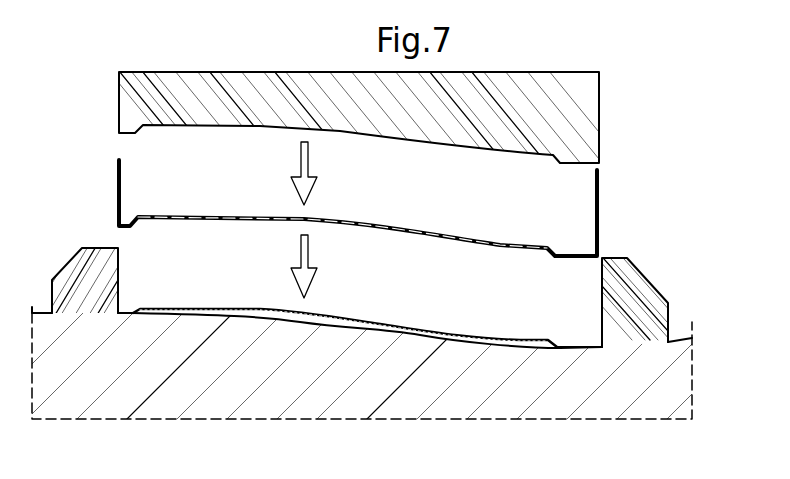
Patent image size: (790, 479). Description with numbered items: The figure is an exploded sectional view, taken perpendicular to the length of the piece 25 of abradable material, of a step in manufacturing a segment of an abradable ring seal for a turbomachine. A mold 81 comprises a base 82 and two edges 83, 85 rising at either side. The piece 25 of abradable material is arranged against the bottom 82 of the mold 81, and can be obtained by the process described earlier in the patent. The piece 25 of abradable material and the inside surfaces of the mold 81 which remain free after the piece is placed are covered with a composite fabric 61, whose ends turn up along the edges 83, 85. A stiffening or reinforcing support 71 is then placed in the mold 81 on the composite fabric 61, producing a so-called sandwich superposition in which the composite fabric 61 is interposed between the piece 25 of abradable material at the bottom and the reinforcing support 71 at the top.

The reinforcing support 71 is at (593, 115).
The composite fabric 61 is at (473, 237).
The piece of abradable material 25 is at (452, 332).
The mold 81 is at (588, 402).
The base 82 is at (583, 343).
The edge 83 is at (92, 268).
The edge 85 is at (620, 270).